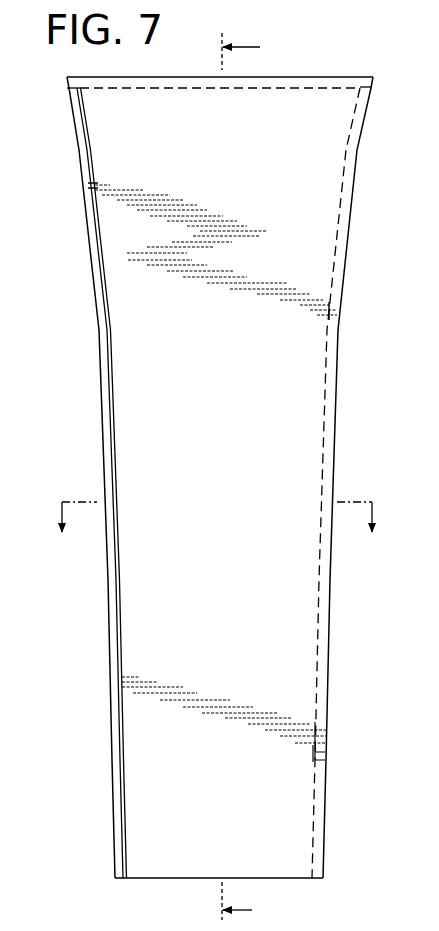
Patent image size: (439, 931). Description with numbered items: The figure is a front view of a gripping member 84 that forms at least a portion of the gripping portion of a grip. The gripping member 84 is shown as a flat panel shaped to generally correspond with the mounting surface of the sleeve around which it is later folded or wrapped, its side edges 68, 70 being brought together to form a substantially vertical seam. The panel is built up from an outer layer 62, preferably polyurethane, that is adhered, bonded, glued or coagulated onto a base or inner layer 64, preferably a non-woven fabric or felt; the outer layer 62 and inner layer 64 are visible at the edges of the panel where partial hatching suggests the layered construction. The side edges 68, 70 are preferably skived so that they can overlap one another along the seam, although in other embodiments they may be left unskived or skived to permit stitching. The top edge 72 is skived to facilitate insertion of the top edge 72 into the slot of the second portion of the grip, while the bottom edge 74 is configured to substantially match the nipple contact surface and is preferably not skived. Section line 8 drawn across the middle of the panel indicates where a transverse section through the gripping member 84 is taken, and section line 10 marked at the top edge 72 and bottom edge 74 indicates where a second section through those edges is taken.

The section line 8- 8 is at (212, 533).
The section line 10- 10 is at (256, 478).
The outer layer 62 is at (297, 782).
The inner layer 64 is at (115, 822).
The side edge 68 is at (342, 647).
The side edge 70 is at (98, 667).
The top edge 72 is at (307, 66).
The bottom edge 74 is at (301, 885).
The gripping member 84 is at (386, 133).